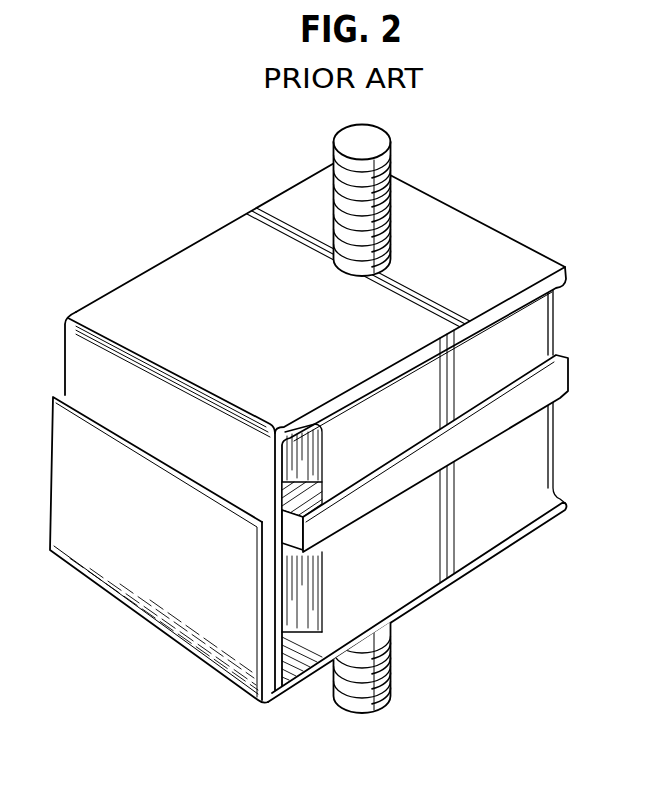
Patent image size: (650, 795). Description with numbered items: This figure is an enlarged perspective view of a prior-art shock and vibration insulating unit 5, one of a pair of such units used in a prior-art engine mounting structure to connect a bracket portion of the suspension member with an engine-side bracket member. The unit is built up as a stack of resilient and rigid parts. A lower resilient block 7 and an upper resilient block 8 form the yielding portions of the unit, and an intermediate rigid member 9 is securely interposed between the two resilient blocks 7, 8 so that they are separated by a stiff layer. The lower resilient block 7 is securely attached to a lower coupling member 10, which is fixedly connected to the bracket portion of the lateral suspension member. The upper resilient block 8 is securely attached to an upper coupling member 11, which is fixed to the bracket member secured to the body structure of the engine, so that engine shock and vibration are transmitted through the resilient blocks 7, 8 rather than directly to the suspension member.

The shock and vibration insulating unit 5 is at (215, 221).
The lower resilient block 7 is at (548, 457).
The upper resilient block 8 is at (555, 312).
The intermediate rigid member 9 is at (307, 528).
The lower coupling member 10 is at (463, 575).
The upper coupling member 11 is at (476, 228).